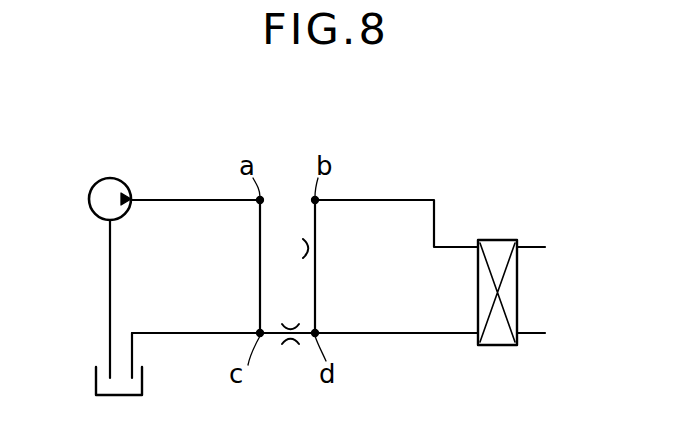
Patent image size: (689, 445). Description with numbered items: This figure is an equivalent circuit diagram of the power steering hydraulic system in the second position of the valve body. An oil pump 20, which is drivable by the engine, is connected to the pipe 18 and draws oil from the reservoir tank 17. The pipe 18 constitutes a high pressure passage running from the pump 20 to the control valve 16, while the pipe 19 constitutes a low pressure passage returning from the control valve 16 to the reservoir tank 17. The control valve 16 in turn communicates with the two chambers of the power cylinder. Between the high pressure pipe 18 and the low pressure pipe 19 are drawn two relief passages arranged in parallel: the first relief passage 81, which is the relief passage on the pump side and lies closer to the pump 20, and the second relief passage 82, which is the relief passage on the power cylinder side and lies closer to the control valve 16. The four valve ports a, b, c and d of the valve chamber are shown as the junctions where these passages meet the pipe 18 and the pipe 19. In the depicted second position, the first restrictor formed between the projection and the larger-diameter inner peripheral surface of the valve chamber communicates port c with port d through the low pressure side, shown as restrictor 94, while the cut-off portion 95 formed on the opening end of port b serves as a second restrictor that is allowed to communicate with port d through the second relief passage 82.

The oil pump 20 is at (94, 184).
The pipe 18 is at (172, 199).
The first relief passage 81 is at (260, 268).
The second relief passage 82 is at (315, 300).
The cut-off portion 95 is at (318, 247).
The pipe 19 is at (182, 336).
The orifice 94 is at (290, 348).
The control valve 16 is at (503, 239).
The reservoir tank 17 is at (95, 381).